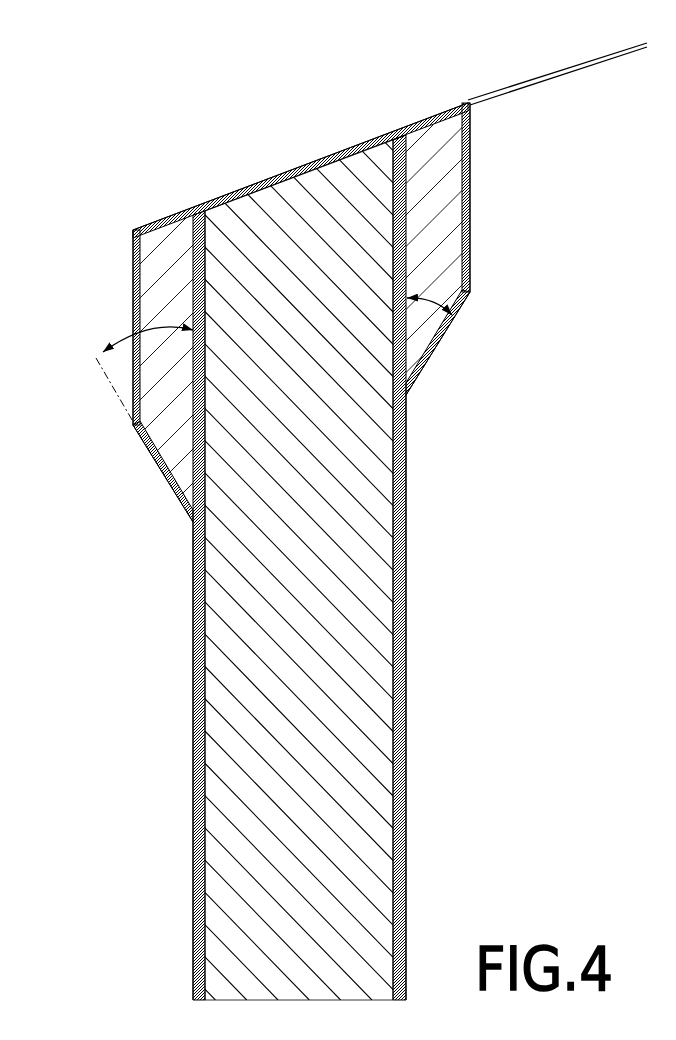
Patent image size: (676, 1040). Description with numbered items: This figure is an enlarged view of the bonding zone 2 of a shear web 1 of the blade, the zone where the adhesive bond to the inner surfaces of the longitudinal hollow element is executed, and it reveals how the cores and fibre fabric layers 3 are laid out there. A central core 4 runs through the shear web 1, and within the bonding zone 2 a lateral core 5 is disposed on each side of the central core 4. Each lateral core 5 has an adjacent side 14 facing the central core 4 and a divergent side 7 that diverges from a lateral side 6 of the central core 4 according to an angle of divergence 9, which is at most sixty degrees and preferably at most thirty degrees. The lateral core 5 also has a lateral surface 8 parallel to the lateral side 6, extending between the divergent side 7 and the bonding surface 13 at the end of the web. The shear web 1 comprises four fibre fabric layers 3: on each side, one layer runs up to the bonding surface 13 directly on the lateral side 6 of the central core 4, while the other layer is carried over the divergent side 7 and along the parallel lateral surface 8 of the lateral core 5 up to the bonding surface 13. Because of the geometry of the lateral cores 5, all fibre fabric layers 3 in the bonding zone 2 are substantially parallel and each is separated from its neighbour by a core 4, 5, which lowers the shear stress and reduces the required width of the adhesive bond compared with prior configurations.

The shear web 1 is at (160, 753).
The bonding zone 2 is at (514, 189).
The fibre fabric layers 3 is at (133, 368).
The central core 4 is at (296, 672).
The lateral core 5 is at (170, 243).
The lateral side 6 is at (205, 425).
The divergent side 7 is at (148, 447).
The lateral surface 8 is at (133, 262).
The angle of divergence 9 is at (128, 343).
The bonding surface 13 is at (269, 170).
The adjacent side 14 is at (398, 197).